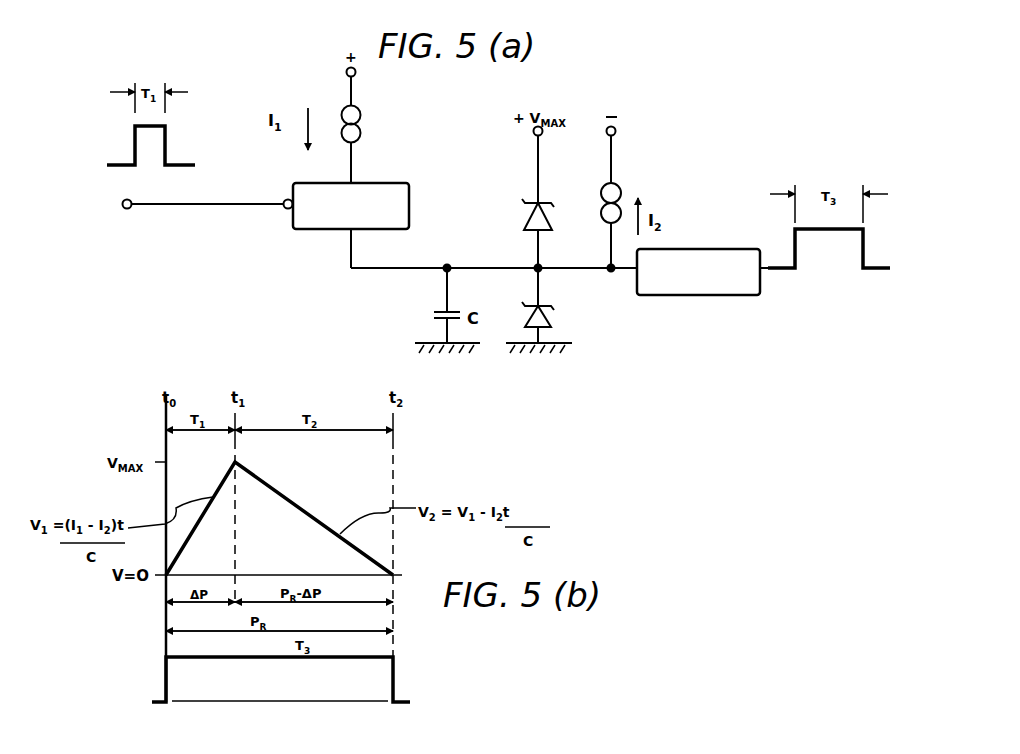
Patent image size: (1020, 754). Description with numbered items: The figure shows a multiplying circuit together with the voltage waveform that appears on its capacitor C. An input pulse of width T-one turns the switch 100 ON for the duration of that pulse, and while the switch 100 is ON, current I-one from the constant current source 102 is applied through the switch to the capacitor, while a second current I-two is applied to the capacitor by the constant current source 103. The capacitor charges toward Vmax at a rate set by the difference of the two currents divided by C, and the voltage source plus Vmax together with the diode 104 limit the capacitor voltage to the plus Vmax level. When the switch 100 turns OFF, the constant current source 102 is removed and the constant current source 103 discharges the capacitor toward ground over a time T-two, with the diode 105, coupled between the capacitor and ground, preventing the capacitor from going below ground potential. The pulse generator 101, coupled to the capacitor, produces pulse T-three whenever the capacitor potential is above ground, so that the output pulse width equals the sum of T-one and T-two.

The switch 100 is at (392, 183).
The pulse generator 101 is at (700, 249).
The constant current source 102 is at (361, 123).
The constant current source 103 is at (620, 196).
The diode 104 is at (549, 214).
The diode 105 is at (549, 316).